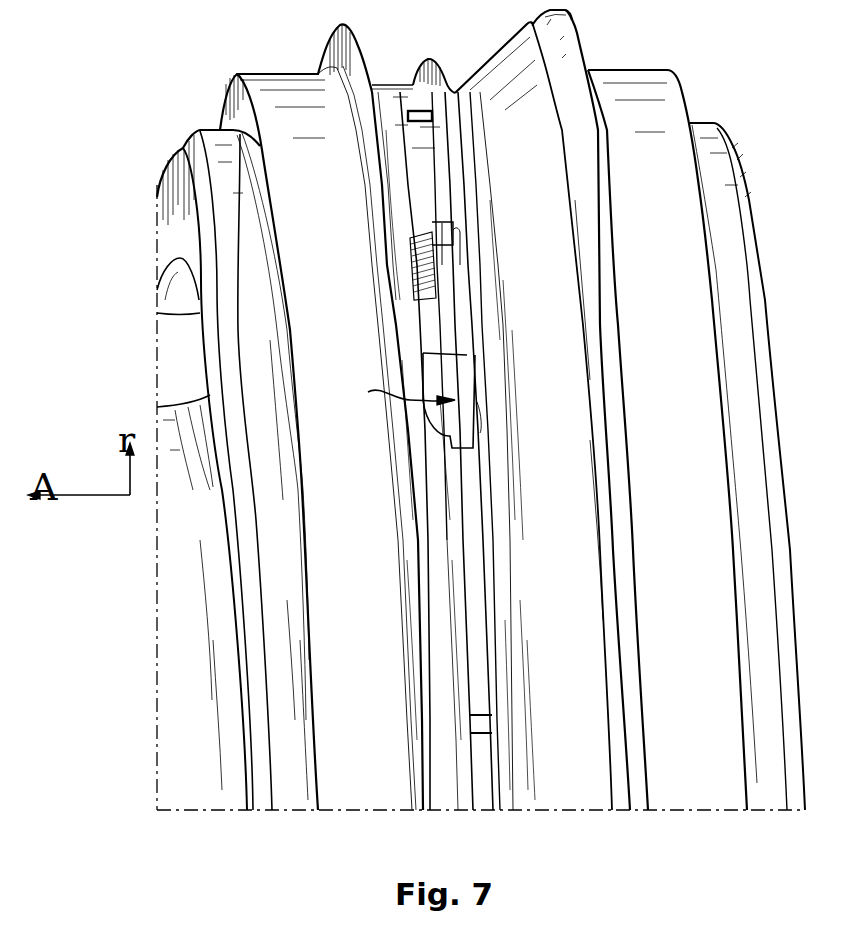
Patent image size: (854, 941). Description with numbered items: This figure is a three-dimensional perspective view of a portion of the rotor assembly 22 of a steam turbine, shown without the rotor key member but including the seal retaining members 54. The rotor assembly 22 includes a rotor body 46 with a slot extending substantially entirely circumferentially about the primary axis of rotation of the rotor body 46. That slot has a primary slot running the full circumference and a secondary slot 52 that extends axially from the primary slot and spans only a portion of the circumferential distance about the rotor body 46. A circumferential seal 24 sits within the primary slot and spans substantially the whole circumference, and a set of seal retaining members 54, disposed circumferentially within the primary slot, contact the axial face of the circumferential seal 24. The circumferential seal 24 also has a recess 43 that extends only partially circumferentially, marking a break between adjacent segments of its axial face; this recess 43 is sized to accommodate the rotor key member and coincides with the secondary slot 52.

The rotor assembly 22 is at (107, 160).
The circumferential seal 24 is at (563, 346).
The recess 43 is at (478, 402).
The rotor body 46 is at (322, 281).
The secondary slot 52 is at (399, 403).
The seal retaining members 54 is at (432, 167).